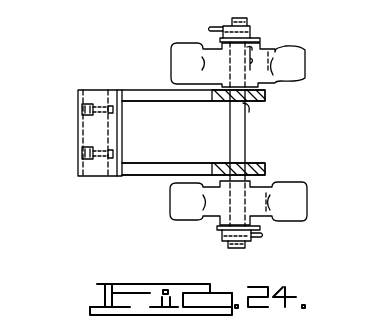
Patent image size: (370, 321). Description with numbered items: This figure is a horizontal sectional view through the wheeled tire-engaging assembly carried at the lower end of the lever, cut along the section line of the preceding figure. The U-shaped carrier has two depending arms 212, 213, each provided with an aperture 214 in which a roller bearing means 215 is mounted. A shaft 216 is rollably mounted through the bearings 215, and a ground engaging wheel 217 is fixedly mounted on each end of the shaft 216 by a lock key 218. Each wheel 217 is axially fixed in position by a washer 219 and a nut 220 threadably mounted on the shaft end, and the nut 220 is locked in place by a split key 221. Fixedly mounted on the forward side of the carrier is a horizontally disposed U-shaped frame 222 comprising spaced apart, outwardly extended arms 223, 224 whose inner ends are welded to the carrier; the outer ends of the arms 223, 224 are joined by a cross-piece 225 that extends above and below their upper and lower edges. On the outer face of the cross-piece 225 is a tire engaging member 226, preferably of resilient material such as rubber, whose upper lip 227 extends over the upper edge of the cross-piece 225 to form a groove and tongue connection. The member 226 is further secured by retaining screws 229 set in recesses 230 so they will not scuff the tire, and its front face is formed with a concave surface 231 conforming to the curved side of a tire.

The arm 212 is at (263, 99).
The arm 213 is at (264, 171).
The aperture 214 is at (249, 112).
The roller bearing means 215 is at (228, 102).
The shaft 216 is at (243, 140).
The ground engaging wheel 217 is at (306, 63).
The lock key 218 is at (251, 53).
The washer 219 is at (261, 228).
The nut 220 is at (253, 241).
The split key 221 is at (216, 231).
The U-shaped frame 222 is at (162, 179).
The arm 223 is at (126, 101).
The arm 224 is at (145, 174).
The cross-piece 225 is at (113, 89).
The tire engaging member 226 is at (79, 178).
The upper lip 227 is at (121, 141).
The retaining screw 229 is at (90, 101).
The recess 230 is at (74, 160).
The concave surface 231 is at (82, 131).